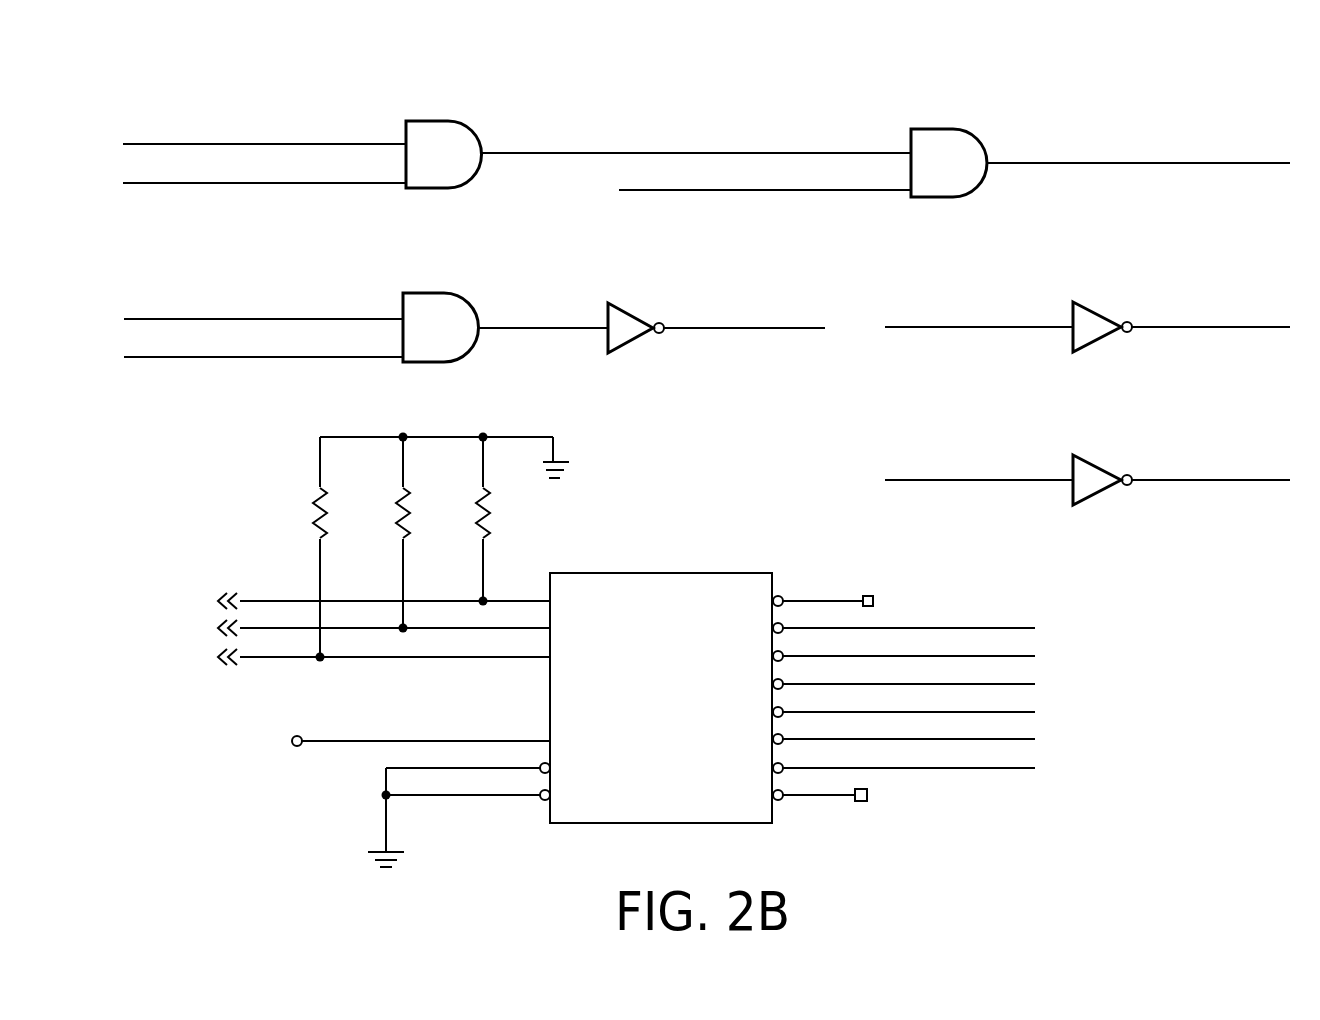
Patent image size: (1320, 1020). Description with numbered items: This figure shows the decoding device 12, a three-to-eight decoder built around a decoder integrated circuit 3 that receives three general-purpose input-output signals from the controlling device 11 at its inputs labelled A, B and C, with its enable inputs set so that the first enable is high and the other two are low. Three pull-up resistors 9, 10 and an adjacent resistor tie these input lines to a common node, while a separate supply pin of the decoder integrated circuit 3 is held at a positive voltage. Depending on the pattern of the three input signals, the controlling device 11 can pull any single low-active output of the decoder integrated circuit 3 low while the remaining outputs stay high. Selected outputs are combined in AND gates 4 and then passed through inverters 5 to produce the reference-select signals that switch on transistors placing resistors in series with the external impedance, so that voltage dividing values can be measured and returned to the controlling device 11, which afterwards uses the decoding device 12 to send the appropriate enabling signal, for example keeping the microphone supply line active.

The decoding device 12 is at (86, 72).
The U3 decoder MM74HCT138 3 is at (661, 701).
The U4 74LS08 AND gates 4 is at (702, 242).
The U5 74LS04 inverters 5 is at (886, 405).
The resistor R9 9 is at (463, 513).
The resistor R10 10 is at (377, 513).
The controlling device 11 is at (296, 513).